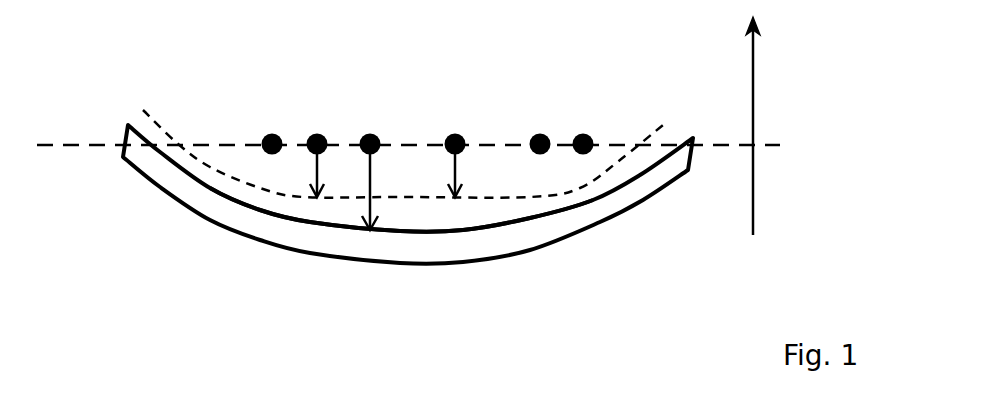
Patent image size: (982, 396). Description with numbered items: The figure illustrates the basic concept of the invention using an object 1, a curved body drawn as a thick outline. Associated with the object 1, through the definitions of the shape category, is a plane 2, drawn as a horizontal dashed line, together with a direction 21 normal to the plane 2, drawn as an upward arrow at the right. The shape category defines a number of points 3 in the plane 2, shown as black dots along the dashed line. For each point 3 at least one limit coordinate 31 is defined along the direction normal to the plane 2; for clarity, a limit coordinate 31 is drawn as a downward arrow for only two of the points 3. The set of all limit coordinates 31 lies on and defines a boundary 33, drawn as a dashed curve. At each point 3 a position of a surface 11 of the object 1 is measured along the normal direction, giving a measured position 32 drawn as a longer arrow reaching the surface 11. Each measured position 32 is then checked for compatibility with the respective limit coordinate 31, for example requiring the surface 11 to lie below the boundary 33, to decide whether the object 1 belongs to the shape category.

The object 1 is at (190, 208).
The surface 11 is at (473, 234).
The plane 2 is at (93, 146).
The direction 21 is at (755, 208).
The points 3 is at (272, 133).
The limit coordinate 31 is at (317, 172).
The measured position 32 is at (371, 182).
The boundary 33 is at (153, 118).